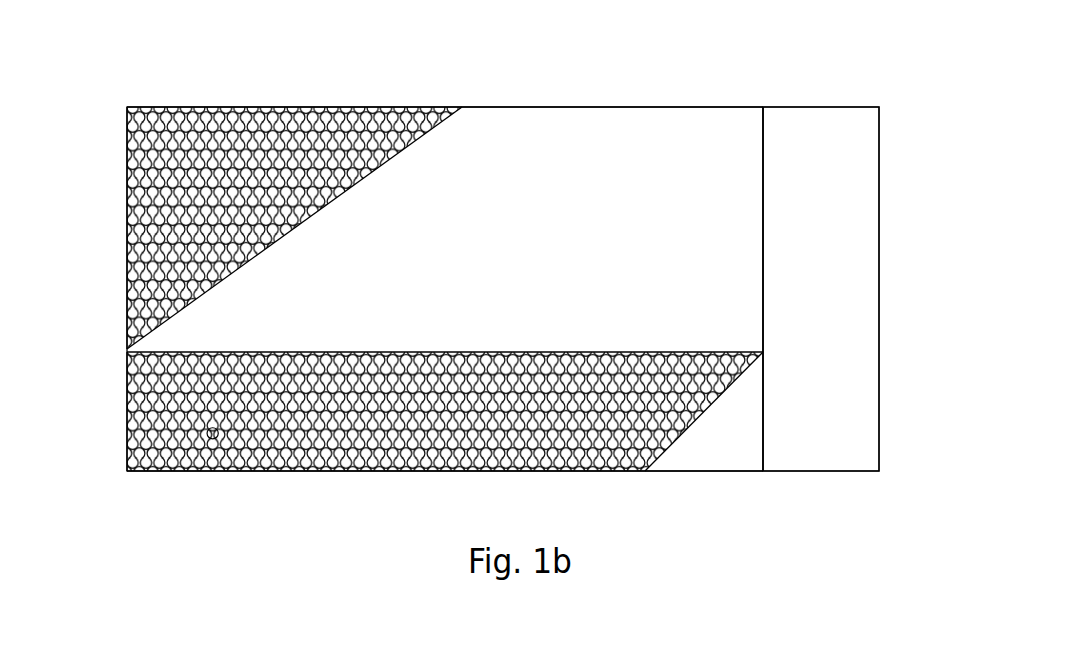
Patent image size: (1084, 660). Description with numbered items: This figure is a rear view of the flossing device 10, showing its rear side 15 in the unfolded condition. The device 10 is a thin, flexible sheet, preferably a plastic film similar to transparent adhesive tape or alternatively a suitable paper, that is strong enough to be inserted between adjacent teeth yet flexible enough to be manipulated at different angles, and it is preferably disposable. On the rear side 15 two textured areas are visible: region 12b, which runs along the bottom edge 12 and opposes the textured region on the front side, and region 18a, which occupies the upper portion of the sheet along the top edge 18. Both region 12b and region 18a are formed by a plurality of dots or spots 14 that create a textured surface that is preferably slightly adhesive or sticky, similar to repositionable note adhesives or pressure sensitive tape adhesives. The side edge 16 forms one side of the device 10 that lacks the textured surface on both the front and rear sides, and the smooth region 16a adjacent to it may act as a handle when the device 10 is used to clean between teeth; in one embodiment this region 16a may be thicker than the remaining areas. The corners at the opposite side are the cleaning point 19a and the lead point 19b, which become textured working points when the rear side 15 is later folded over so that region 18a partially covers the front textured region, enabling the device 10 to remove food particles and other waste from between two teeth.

The flossing device 10 is at (693, 84).
The bottom edge 12 is at (515, 471).
The region 12b is at (185, 404).
The spots 14 is at (214, 432).
The rear side 15 is at (506, 254).
The side edge 16 is at (879, 242).
The region 16a is at (848, 278).
The second layer 18 is at (522, 107).
The region 18a is at (181, 206).
The cleaning point 19a is at (127, 471).
The lead point 19b is at (127, 108).